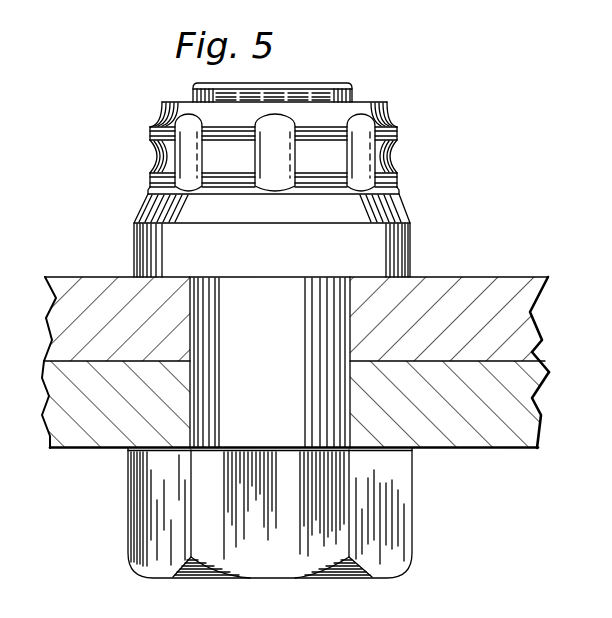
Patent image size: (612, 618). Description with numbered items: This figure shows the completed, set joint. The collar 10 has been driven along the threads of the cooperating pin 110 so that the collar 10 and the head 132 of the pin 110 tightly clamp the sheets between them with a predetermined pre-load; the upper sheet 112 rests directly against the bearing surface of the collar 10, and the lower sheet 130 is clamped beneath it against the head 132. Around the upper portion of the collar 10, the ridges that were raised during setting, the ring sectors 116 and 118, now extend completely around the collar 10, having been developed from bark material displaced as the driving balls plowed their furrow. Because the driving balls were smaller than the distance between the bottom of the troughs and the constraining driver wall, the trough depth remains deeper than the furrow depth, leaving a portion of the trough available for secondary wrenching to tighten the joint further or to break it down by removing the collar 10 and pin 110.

The collar 10 is at (400, 246).
The pin 110 is at (352, 86).
The sheet 112 is at (463, 288).
The ring sector 116 is at (152, 181).
The ring sector 118 is at (150, 134).
The panel lower layer 130 is at (517, 417).
The head 132 is at (412, 511).